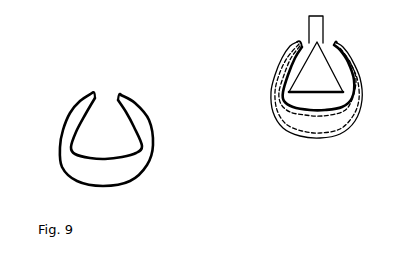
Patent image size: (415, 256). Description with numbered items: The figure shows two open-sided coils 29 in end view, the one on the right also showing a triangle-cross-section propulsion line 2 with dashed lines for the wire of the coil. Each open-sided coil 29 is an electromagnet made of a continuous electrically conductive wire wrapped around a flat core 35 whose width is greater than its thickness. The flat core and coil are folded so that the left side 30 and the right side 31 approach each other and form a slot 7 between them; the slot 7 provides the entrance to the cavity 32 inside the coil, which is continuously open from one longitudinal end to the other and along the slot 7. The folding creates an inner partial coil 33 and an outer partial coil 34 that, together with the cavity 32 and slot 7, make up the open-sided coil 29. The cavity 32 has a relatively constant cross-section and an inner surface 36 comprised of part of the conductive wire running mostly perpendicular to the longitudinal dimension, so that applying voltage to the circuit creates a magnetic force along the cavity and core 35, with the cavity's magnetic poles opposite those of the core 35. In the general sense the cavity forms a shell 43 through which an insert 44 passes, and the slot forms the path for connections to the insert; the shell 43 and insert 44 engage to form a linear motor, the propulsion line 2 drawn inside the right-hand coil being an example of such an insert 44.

The propulsion line 2 is at (289, 54).
The slot 7 is at (105, 92).
The open-sided coil 29 is at (111, 148).
The left side 30 is at (92, 92).
The right side 31 is at (120, 92).
The cavity 32 is at (107, 135).
The inner partial coil 33 is at (313, 111).
The outer partial coil 34 is at (322, 136).
The core 35 is at (108, 170).
The inner surface 36 is at (138, 135).
The shell 43 is at (313, 110).
The insert 44 is at (313, 78).